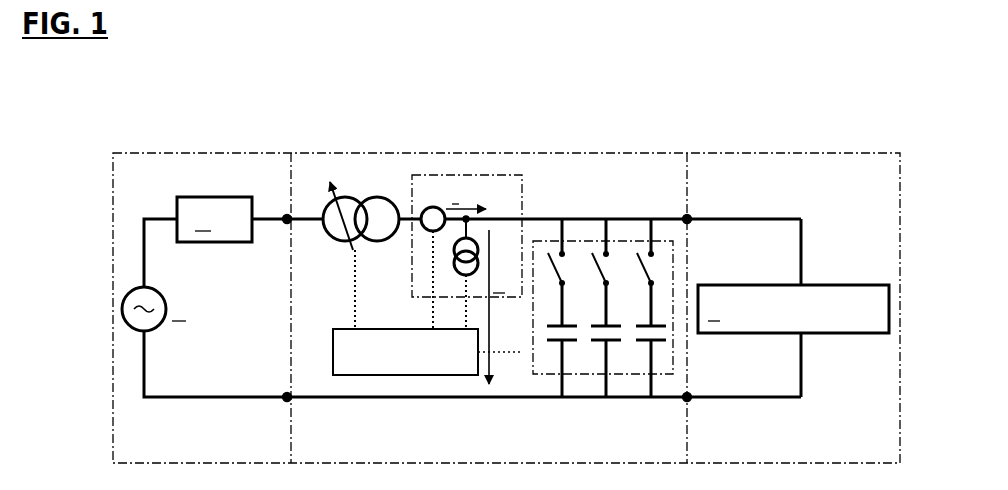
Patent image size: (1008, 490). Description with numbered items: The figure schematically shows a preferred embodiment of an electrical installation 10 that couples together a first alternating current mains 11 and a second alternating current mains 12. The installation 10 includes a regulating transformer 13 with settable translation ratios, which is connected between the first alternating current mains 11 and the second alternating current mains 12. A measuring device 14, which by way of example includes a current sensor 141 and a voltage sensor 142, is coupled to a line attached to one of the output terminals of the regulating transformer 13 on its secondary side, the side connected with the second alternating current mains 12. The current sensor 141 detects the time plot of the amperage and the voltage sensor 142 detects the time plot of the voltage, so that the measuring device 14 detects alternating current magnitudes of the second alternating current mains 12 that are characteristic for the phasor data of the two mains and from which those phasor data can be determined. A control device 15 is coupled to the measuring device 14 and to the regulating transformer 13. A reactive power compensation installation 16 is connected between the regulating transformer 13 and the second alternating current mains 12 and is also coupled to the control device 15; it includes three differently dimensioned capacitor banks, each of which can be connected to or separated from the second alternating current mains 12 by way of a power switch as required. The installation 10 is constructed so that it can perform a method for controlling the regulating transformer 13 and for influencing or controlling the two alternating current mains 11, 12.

The electrical installation 10 is at (681, 180).
The first alternating current mains 11 is at (159, 447).
The second alternating current mains 12 is at (881, 449).
The regulating transformer 13 is at (345, 197).
The measuring device 14 is at (410, 175).
The current sensor 141 is at (433, 207).
The voltage sensor 142 is at (472, 239).
The control device 15 is at (420, 366).
The reactive power compensation installation 16 is at (588, 240).